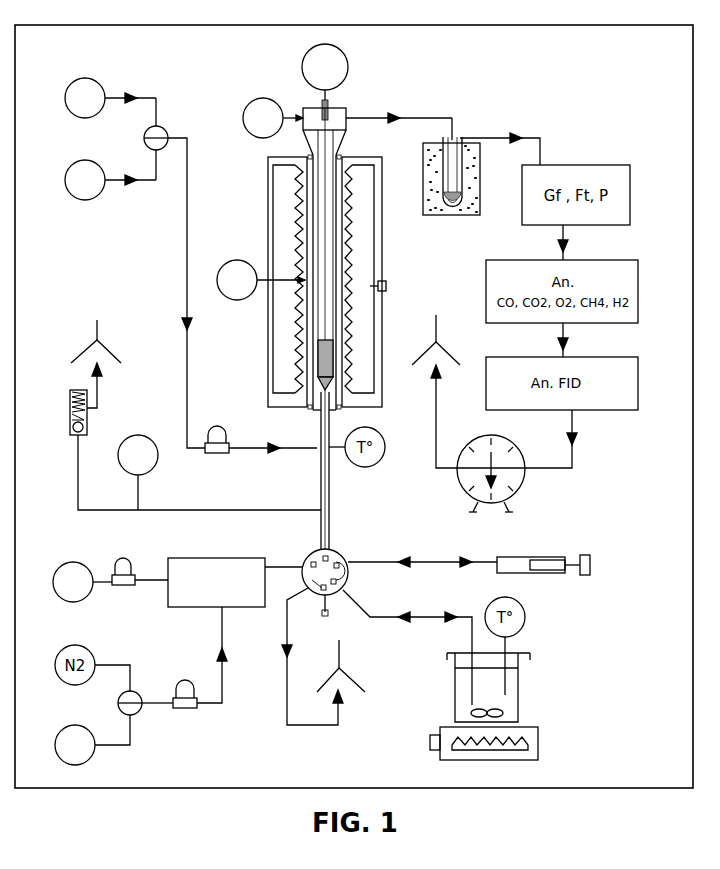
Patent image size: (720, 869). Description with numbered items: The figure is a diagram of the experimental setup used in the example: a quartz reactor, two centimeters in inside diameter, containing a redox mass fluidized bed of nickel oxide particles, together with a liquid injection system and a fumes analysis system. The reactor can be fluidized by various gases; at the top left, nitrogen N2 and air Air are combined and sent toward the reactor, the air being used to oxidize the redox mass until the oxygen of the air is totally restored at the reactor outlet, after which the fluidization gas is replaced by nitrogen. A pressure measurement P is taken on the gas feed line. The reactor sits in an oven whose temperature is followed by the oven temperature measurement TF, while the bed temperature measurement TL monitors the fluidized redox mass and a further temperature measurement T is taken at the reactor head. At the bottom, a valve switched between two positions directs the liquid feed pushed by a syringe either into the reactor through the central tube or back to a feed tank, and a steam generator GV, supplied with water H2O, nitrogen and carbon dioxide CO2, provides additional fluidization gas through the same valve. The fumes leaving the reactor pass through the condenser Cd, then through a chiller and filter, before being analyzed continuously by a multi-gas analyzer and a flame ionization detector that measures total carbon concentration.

The nitrogen N2 is at (85, 98).
The air Air is at (85, 180).
The pressure measurement P is at (138, 472).
The bed temperature measurement TL is at (325, 76).
The temperature measurement T is at (273, 118).
The oven temperature measurement TF is at (261, 280).
The condenser Cd is at (451, 185).
The water H2O is at (73, 582).
The steam generator GV is at (216, 582).
The carbon dioxide CO2 is at (75, 745).